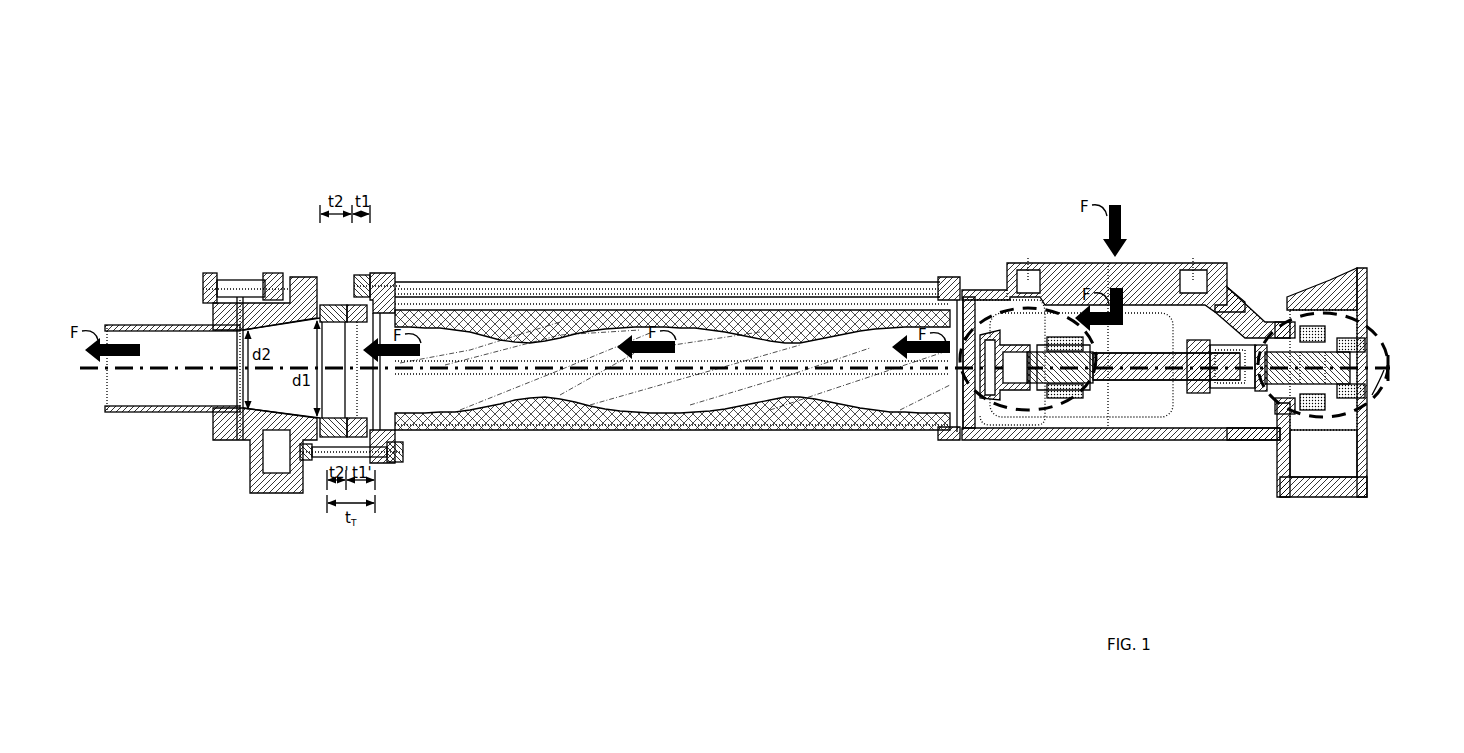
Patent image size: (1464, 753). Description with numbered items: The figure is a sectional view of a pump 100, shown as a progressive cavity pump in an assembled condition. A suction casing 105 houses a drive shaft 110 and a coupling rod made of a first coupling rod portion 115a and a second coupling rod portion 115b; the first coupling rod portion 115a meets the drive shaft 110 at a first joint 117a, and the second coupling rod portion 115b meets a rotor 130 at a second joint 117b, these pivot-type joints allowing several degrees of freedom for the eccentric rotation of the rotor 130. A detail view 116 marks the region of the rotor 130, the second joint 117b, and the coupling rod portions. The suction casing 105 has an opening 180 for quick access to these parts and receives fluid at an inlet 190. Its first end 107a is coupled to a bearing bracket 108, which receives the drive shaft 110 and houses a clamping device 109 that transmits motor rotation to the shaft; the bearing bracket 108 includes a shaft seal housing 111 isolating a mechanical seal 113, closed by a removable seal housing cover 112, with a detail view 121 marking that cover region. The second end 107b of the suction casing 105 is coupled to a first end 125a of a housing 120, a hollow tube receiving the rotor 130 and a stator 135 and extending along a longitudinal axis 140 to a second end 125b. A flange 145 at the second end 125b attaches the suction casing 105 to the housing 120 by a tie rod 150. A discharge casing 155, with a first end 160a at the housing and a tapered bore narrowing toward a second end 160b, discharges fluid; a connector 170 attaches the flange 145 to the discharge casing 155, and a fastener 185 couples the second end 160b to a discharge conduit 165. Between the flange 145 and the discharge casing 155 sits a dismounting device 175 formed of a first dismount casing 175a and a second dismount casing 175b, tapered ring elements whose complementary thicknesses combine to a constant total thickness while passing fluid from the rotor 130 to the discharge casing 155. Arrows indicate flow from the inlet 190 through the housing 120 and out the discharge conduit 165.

The pump 100 is at (1332, 96).
The suction casing 105 is at (1174, 366).
The first end of suction casing 107a is at (1286, 218).
The second end of suction casing 107b is at (962, 261).
The bearing bracket 108 is at (1322, 409).
The clamping device 109 is at (1371, 320).
The drive shaft 110 is at (1270, 347).
The shaft seal housing 111 is at (1290, 433).
The seal housing cover 112 is at (1304, 325).
The mechanical seal 113 is at (1293, 325).
The first coupling rod portion 115a is at (1188, 398).
The second coupling rod portion 115b is at (1038, 385).
The detail view 116 is at (972, 395).
The first joint 117a is at (1222, 408).
The second joint 117b is at (1022, 397).
The housing 120 is at (672, 360).
The detail view 121 is at (1381, 392).
The first end of housing 125a is at (932, 241).
The second end of housing 125b is at (373, 330).
The rotor 130 is at (714, 332).
The stator 135 is at (556, 318).
The longitudinal axis 140 is at (1387, 357).
The flange 145 is at (376, 272).
The tie rod 150 is at (440, 284).
The discharge casing 155 is at (254, 338).
The first end of discharge casing 160a is at (316, 326).
The second end of discharge casing 160b is at (254, 412).
The discharge conduit 165 is at (128, 311).
The connector 170 is at (382, 462).
The dismounting device 175 is at (327, 293).
The first dismount casing 175a is at (353, 304).
The second dismount casing 175b is at (343, 306).
The opening 180 is at (1106, 417).
The fastener 185 is at (237, 273).
The inlet 190 is at (1144, 248).